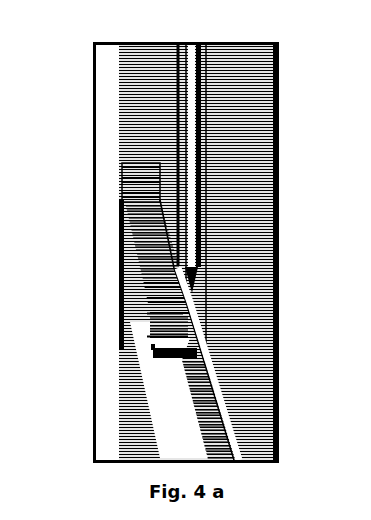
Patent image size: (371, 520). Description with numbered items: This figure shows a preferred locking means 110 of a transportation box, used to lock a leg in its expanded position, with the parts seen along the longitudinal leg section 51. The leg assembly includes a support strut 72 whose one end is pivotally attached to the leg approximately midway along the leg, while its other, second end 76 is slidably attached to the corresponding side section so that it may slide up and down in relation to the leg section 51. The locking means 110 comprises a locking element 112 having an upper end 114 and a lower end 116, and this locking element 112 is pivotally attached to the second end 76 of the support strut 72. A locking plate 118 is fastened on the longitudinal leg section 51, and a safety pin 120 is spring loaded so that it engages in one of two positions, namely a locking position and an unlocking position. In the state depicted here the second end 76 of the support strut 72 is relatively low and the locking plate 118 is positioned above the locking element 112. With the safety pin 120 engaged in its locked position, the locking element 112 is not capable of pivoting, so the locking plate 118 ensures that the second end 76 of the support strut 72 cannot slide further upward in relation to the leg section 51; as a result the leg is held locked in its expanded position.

The locking means 110 is at (290, 94).
The leg section 51 is at (142, 83).
The locking plate 118 is at (133, 177).
The upper end 114 is at (140, 222).
The locking element 112 is at (157, 260).
The second end 76 is at (188, 307).
The lower end 116 is at (165, 330).
The safety pin 120 is at (197, 357).
The support strut 72 is at (170, 396).